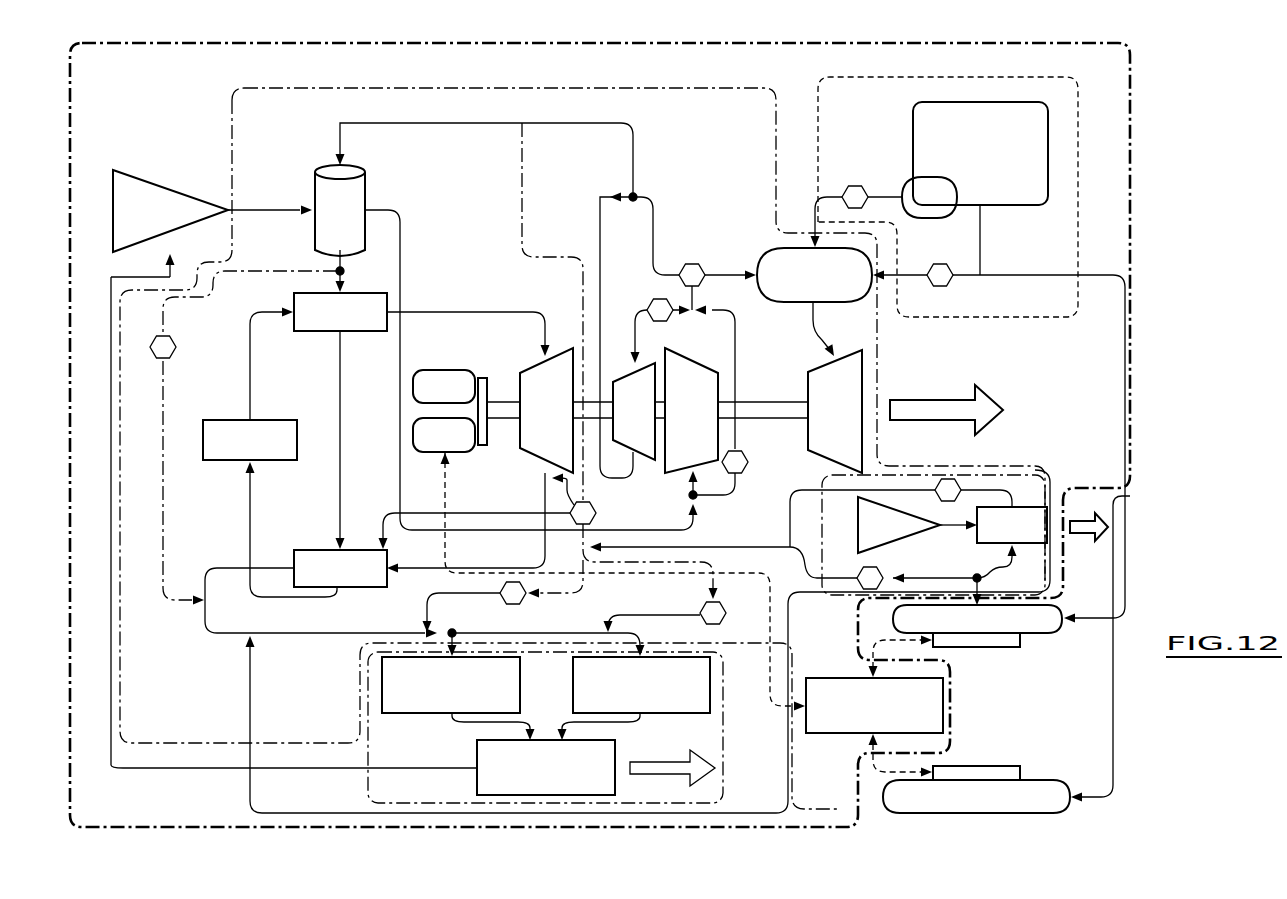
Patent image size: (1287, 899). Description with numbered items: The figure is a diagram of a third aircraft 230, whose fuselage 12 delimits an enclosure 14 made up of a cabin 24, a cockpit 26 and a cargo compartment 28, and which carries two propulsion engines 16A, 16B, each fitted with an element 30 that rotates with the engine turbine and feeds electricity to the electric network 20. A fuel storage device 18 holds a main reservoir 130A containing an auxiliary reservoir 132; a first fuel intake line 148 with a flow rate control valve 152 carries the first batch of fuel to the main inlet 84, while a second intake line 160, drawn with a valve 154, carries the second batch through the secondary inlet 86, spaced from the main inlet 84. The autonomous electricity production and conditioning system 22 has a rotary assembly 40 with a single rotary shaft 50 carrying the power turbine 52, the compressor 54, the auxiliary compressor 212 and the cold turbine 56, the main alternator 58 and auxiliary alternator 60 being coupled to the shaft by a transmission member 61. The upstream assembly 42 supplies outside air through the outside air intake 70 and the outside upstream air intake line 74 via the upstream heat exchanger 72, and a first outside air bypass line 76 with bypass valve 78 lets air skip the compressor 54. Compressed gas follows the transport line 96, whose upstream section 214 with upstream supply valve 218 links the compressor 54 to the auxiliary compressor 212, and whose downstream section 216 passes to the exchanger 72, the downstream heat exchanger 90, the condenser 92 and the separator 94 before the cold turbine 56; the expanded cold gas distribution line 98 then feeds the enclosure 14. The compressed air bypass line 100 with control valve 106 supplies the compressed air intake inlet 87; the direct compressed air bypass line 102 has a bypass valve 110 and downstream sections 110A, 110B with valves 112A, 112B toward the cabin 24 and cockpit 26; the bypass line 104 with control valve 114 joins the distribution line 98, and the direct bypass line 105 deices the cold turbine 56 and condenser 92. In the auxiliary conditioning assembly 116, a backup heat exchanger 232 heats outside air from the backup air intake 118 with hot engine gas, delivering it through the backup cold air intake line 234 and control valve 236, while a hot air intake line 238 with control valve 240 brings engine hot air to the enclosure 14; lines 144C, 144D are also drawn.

The fuselage 12 is at (870, 814).
The enclosure 14 is at (725, 745).
The engine 16A is at (1043, 622).
The engine 16B is at (1078, 812).
The fuel storage device 18 is at (1078, 127).
The electric network 20 is at (692, 614).
The autonomous electricity production and conditioning system 22 is at (742, 78).
The cabin 24 is at (458, 698).
The cockpit 26 is at (634, 698).
The cargo compartment 28 is at (546, 767).
The element 30 is at (1000, 648).
The rotary assembly 40 is at (878, 393).
The upstream assembly 42 is at (136, 148).
The rotary shaft 50 is at (768, 412).
The power turbine 52 is at (835, 411).
The compressor 54 is at (691, 410).
The cold turbine 56 is at (546, 410).
The main alternator 58 is at (444, 435).
The auxiliary alternator 60 is at (444, 386).
The transmission member 61 is at (483, 378).
The outside air intake 70 is at (294, 469).
The upstream heat exchanger 72 is at (340, 210).
The outside upstream air intake line 74 is at (400, 258).
The first outside air bypass line 76 is at (738, 322).
The bypass valve 78 is at (745, 475).
The main inlet 84 is at (837, 330).
The secondary inlet 86 is at (812, 240).
The compressed air intake inlet 87 is at (760, 270).
The downstream heat exchanger 90 is at (400, 335).
The condenser 92 is at (425, 493).
The separator 94 is at (270, 508).
The transport line 96 is at (585, 110).
The expanded cold gas distribution line 98 is at (415, 578).
The compressed air bypass line 100 is at (727, 268).
The direct compressed air bypass line 102 is at (522, 140).
The bypass line 104 is at (282, 270).
The direct bypass line 105 is at (513, 513).
The control valve 106 is at (690, 262).
The bypass valve 110 is at (596, 510).
The downstream section 110A is at (707, 562).
The downstream section 110B is at (586, 585).
The valve 112A is at (524, 600).
The valve 112B is at (722, 625).
The control valve 114 is at (176, 355).
The auxiliary conditioning assembly 116 is at (1042, 578).
The backup air intake 118 is at (917, 525).
The main reservoir 130A is at (980, 153).
The auxiliary reservoir 132 is at (929, 197).
The fuel outlet 144C is at (1128, 533).
The fuel return line 144D is at (1094, 715).
The first fuel intake line 148 is at (975, 285).
The flow rate control valve 152 is at (938, 290).
The valve 154 is at (853, 185).
The second intake line 160 is at (880, 195).
The auxiliary compressor 212 is at (634, 411).
The upstream section 214 is at (685, 305).
The downstream section 216 is at (640, 140).
The upstream supply valve 218 is at (645, 305).
The third aircraft 230 is at (1142, 188).
The backup heat exchanger 232 is at (1040, 505).
The backup cold air intake line 234 is at (994, 490).
The control valve 236 is at (947, 478).
The hot air intake line 238 is at (835, 598).
The control valve 240 is at (860, 566).